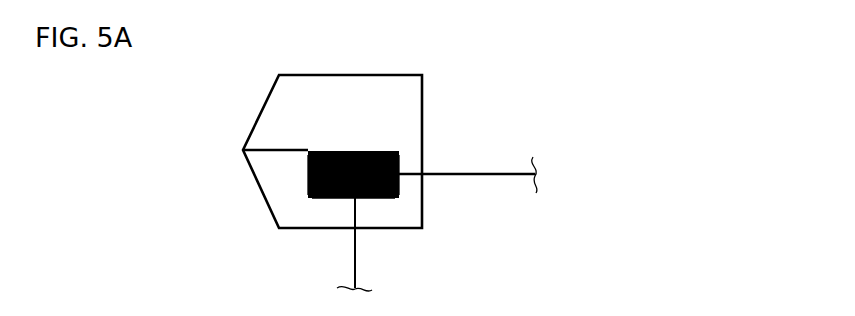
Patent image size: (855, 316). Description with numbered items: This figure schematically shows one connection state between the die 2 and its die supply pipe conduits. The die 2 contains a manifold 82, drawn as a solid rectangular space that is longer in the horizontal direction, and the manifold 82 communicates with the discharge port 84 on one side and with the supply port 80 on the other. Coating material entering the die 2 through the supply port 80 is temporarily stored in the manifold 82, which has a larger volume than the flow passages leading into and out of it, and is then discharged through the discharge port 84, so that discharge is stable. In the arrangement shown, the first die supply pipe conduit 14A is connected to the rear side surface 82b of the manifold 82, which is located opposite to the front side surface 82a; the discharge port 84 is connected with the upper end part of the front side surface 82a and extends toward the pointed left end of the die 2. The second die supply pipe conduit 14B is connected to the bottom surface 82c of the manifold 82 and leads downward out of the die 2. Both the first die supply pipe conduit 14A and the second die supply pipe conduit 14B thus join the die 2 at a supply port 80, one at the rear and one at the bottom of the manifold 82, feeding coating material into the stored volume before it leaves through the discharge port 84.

The die 2 is at (370, 75).
The manifold 82 is at (369, 150).
The front side surface 82a is at (308, 173).
The rear side surface 82b is at (400, 163).
The bottom surface 82c is at (333, 198).
The discharge port 84 is at (243, 147).
The first die supply pipe conduit 14A is at (505, 173).
The second die supply pipe conduit 14B is at (355, 258).
The supply port 80 is at (425, 176).